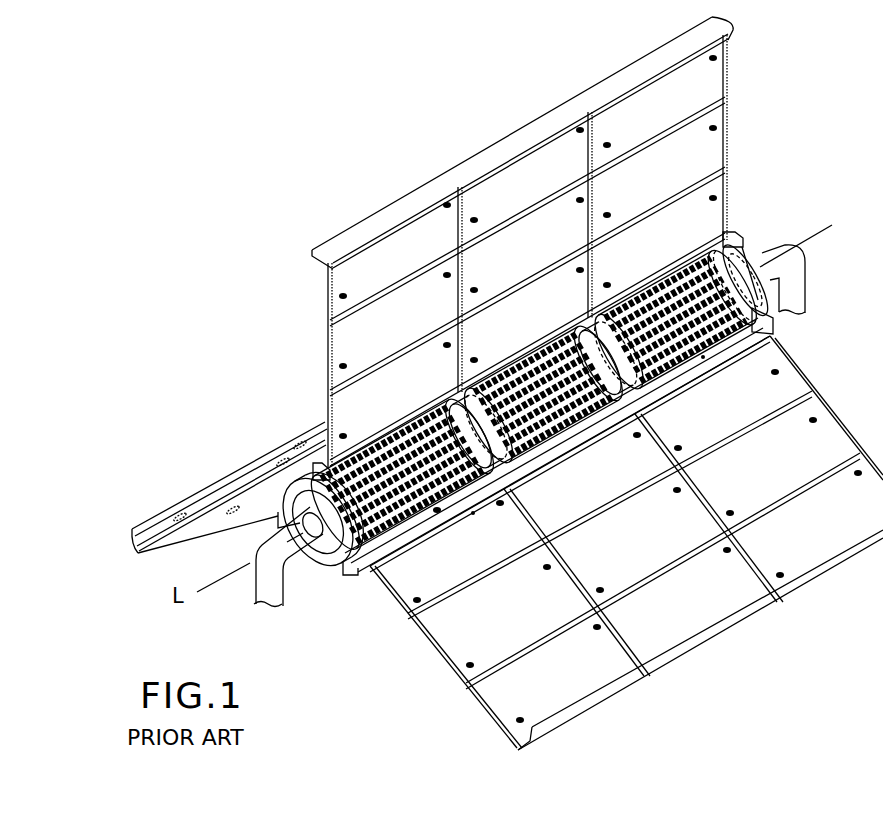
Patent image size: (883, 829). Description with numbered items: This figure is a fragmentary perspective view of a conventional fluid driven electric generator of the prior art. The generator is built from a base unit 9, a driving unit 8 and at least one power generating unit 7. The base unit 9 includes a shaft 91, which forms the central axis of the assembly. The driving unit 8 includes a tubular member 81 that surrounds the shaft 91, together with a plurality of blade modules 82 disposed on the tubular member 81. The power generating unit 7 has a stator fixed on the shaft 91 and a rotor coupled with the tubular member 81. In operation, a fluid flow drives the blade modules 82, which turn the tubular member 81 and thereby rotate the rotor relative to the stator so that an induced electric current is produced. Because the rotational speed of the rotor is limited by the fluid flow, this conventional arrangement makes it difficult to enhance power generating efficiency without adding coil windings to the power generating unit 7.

The power generating unit 7 is at (370, 462).
The driving unit 8 is at (373, 597).
The tubular member 81 is at (318, 572).
The blade modules 82 is at (340, 280).
The base unit 9 is at (805, 285).
The shaft 91 is at (762, 255).